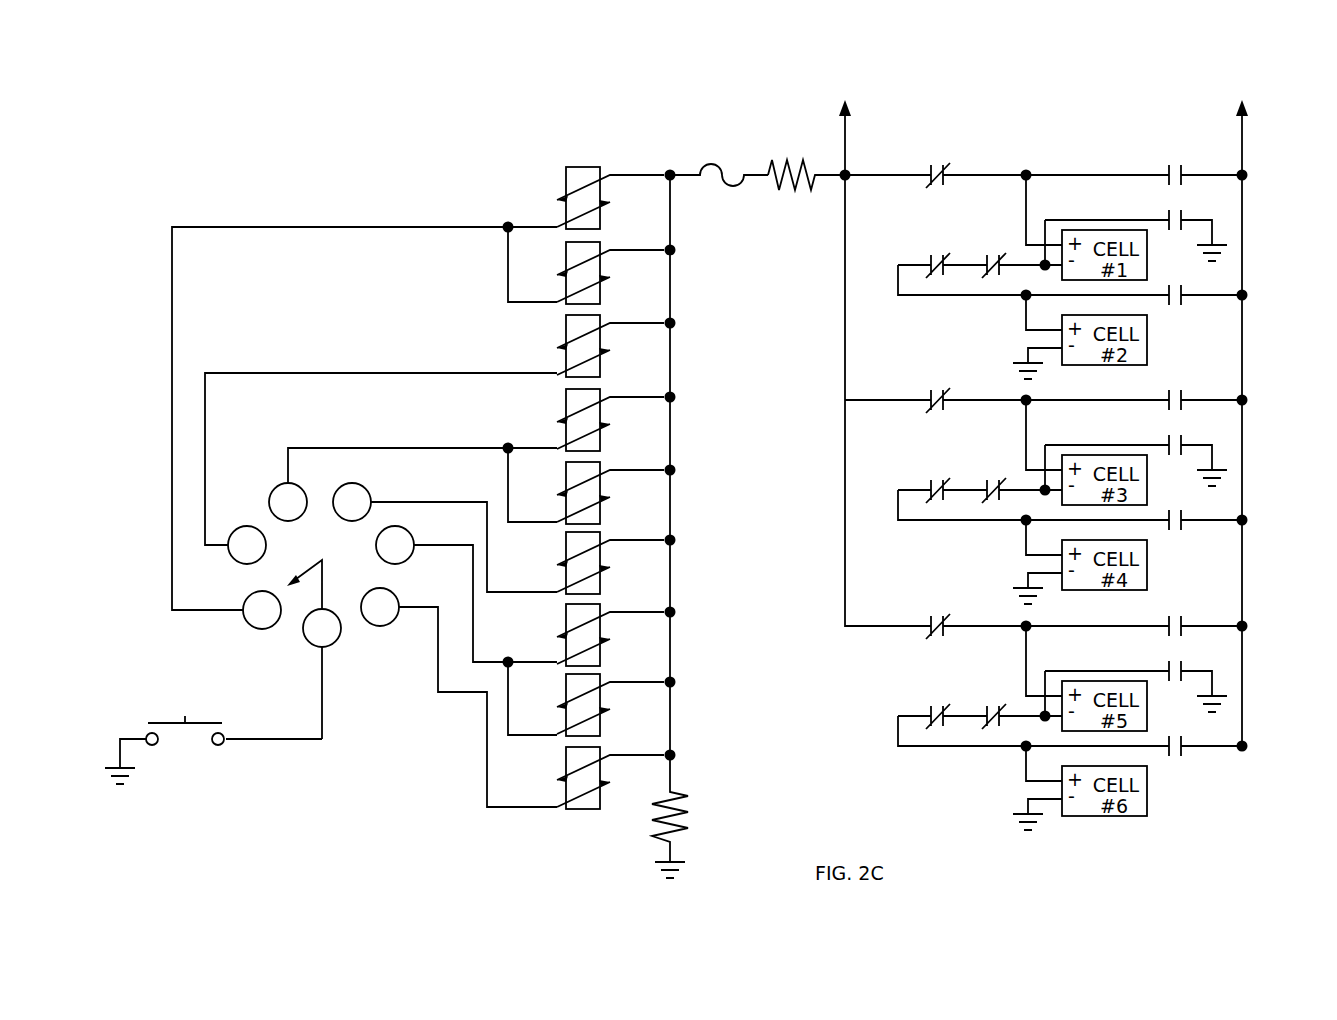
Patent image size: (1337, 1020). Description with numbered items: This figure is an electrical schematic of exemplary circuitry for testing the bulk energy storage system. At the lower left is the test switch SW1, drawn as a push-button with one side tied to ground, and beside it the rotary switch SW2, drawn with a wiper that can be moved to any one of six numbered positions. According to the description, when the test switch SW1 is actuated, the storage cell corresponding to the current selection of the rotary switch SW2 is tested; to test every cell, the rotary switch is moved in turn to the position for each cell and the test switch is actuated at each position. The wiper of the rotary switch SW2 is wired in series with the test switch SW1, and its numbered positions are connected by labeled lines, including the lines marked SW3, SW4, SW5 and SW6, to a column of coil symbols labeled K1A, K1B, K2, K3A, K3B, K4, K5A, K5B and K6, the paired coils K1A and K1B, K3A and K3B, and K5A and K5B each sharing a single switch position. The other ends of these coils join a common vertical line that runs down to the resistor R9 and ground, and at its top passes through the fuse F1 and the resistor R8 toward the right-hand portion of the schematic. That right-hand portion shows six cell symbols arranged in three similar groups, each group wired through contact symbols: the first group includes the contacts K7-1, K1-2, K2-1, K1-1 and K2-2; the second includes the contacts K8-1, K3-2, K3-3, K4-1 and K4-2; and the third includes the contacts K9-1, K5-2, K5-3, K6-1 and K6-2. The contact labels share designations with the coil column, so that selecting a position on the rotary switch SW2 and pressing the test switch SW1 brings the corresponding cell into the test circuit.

The test switch SW1 is at (331, 492).
The rotary switch SW2 is at (381, 543).
The rotary switch position 3 net SW3 is at (422, 472).
The rotary switch position 4 net SW4 is at (464, 534).
The rotary switch position 5 net SW5 is at (485, 627).
The rotary switch position 6 net SW6 is at (478, 694).
The relay coil K1A is at (592, 198).
The relay coil K1B is at (592, 273).
The relay coil K2 is at (598, 346).
The relay coil K3A is at (592, 420).
The relay coil K3B is at (592, 493).
The relay coil K4 is at (598, 563).
The relay coil K5A is at (592, 635).
The relay coil K5B is at (592, 705).
The relay coil K6 is at (598, 778).
The resistor 1.5K R9 is at (696, 816).
The fuse 1A F1 is at (719, 153).
The resistor 250 R8 is at (806, 147).
The relay contact K7-1 is at (937, 163).
The relay contact K1-2 is at (1175, 184).
The relay contact K2-1 is at (937, 253).
The relay contact K1-1 is at (993, 253).
The relay contact K2-2 is at (1175, 282).
The relay contact K8-1 is at (937, 388).
The relay contact K3-2 is at (1084, 433).
The relay contact K3-3 is at (1175, 433).
The relay contact K4-1 is at (937, 478).
The relay contact K4-2 is at (1175, 507).
The relay contact K9-1 is at (937, 614).
The relay contact K5-2 is at (1084, 659).
The relay contact K5-3 is at (1175, 659).
The relay contact K6-1 is at (937, 704).
The relay contact K6-2 is at (1175, 733).